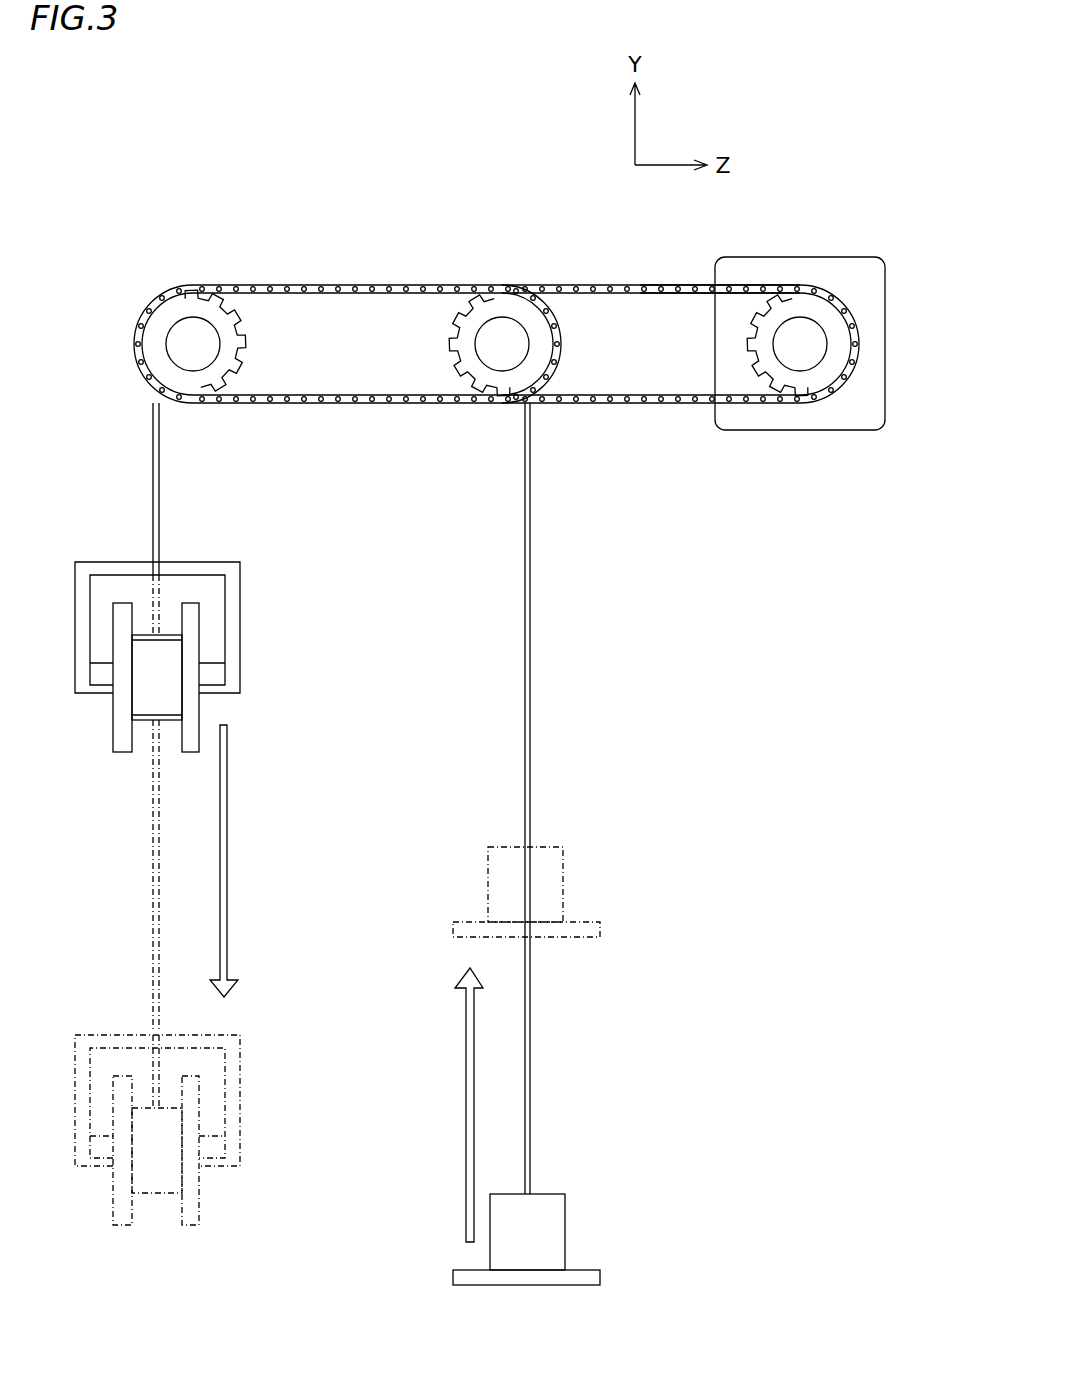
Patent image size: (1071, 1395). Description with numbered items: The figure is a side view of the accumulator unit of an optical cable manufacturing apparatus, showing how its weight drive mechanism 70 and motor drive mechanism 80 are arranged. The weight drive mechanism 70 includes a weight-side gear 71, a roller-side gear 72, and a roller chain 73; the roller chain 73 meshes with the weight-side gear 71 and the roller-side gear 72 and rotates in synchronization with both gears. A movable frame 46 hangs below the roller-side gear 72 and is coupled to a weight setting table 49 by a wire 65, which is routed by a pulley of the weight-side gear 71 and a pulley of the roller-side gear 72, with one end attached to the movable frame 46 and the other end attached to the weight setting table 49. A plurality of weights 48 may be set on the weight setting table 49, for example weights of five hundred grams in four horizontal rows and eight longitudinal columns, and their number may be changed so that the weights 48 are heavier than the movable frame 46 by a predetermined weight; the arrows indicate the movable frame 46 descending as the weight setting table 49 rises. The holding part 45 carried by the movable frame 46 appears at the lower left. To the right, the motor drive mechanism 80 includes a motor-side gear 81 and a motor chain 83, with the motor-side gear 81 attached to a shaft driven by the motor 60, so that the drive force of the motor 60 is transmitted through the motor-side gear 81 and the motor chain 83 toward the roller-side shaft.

The holding member 45 is at (120, 728).
The movable frame 46 is at (233, 603).
The weights 48 is at (555, 1218).
The weight setting table 49 is at (590, 1278).
The motor 60 is at (877, 343).
The wire 65 is at (535, 595).
The weight drive mechanism 70 is at (548, 267).
The weight-side gear 71 is at (458, 342).
The roller-side gear 72 is at (237, 336).
The roller chain 73 is at (398, 285).
The motor drive mechanism 80 is at (818, 266).
The motor-side gear 81 is at (803, 385).
The motor chain 83 is at (684, 285).